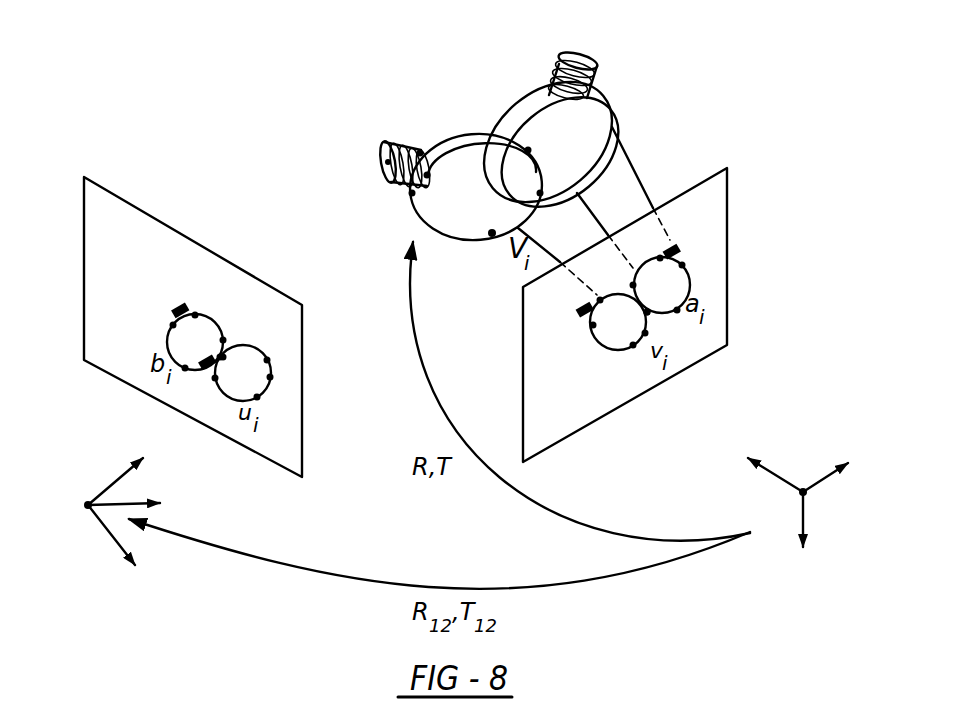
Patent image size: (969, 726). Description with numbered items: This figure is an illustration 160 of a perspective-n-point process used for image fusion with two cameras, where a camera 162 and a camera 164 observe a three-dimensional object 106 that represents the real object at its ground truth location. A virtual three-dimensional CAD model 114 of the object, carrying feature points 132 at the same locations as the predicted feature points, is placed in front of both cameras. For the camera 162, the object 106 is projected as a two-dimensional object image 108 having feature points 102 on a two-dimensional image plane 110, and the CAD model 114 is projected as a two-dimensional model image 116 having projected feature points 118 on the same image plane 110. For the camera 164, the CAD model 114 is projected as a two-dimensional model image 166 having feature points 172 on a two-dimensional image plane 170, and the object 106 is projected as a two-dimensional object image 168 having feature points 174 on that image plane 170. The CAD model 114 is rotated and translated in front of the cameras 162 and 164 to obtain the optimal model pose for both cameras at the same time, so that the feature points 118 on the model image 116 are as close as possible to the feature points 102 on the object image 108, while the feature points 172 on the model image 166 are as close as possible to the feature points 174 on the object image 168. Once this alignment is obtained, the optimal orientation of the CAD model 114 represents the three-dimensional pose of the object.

The illustration 160 is at (277, 98).
The virtual 3D CAD model 114 is at (383, 163).
The 3D object 106 is at (592, 96).
The feature points 132 is at (492, 237).
The 2D image plane 110 is at (727, 217).
The feature points 102 is at (680, 263).
The 2D object image 108 is at (690, 292).
The 2D model image 116 is at (593, 330).
The projected feature points 118 is at (633, 347).
The 2D image plane 170 is at (132, 387).
The 2D object image 168 is at (213, 317).
The 2D model image 166 is at (253, 342).
The feature points 174 is at (185, 368).
The feature points 172 is at (257, 397).
The camera 164 is at (84, 507).
The camera 162 is at (808, 493).